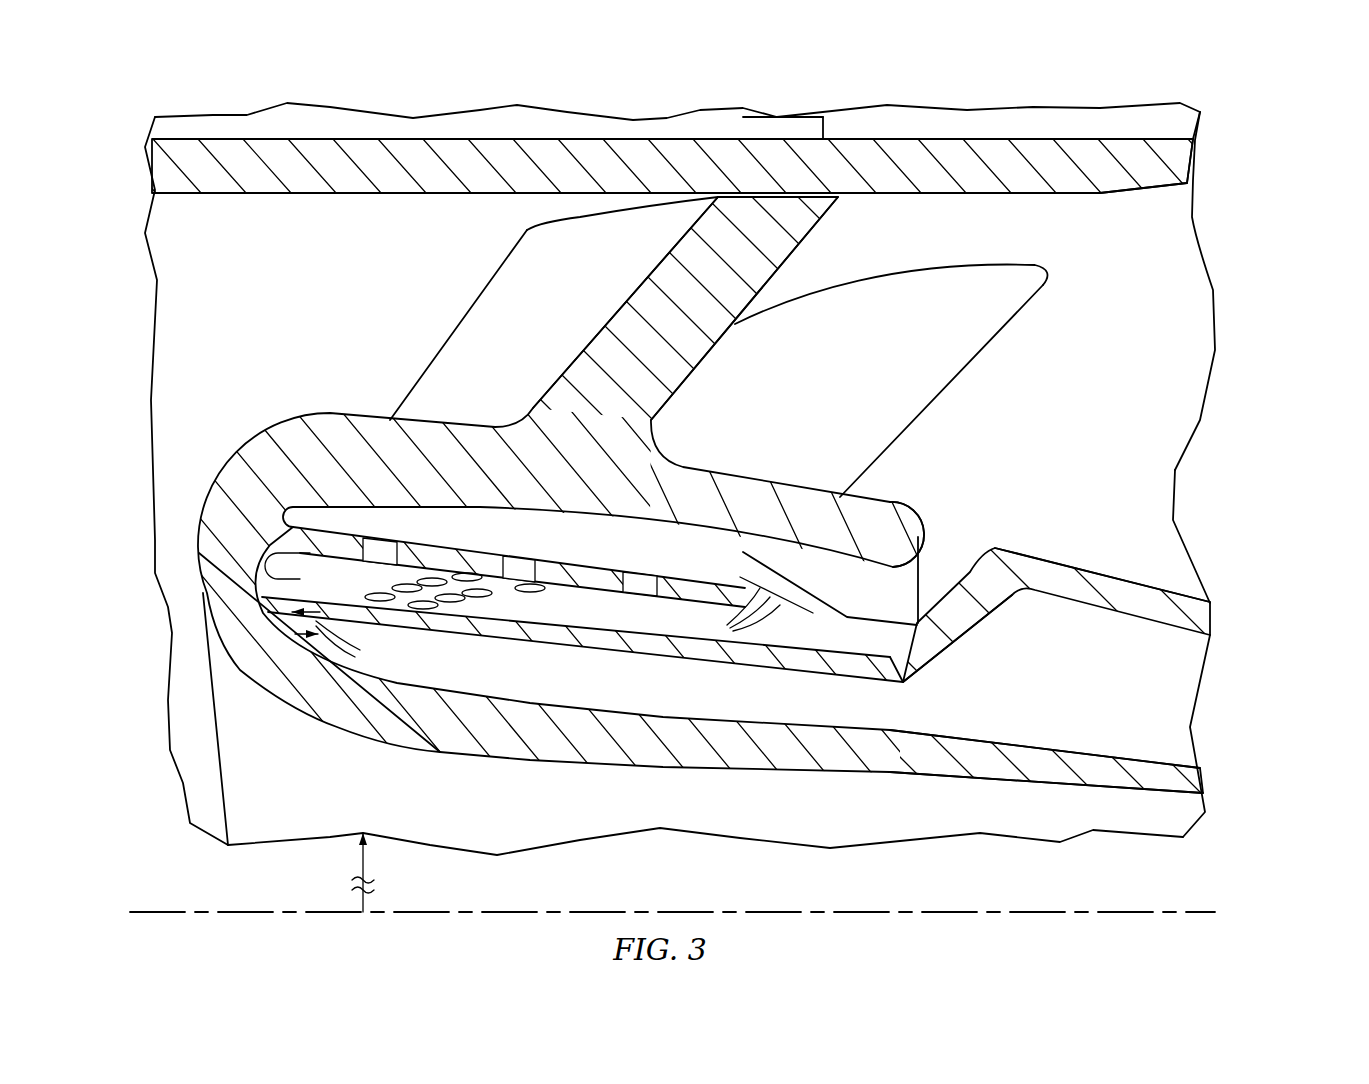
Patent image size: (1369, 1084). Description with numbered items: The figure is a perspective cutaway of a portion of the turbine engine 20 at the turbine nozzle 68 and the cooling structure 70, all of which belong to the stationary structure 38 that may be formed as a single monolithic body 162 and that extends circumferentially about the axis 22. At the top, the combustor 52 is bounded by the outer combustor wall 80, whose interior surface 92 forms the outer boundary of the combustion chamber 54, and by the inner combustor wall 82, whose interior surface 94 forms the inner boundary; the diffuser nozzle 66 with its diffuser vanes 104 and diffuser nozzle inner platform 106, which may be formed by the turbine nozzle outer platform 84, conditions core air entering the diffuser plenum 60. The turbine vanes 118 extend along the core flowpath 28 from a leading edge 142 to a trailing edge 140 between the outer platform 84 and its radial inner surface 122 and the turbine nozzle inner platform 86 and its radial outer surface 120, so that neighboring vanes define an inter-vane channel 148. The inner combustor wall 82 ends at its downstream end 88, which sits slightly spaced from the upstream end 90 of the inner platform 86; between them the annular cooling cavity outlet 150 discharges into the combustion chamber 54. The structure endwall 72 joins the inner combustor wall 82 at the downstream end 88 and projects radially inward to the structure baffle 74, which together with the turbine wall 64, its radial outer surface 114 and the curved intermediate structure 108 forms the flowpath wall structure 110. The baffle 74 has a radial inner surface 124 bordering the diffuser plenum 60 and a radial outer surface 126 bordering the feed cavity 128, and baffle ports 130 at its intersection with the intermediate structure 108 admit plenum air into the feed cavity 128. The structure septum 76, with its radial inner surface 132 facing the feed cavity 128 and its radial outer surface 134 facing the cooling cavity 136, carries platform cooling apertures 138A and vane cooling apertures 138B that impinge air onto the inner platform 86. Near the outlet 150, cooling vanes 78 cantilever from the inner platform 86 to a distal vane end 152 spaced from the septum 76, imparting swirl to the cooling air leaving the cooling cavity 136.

The turbine engine 20 is at (1212, 90).
The axis 22 is at (142, 910).
The core flowpath 28 is at (198, 354).
The stationary structure 38 is at (1210, 130).
The monolithic body 162 is at (1190, 161).
The combustor 52 is at (1133, 128).
The combustion chamber 54 is at (1138, 422).
The diffuser plenum 60 is at (1116, 702).
The turbine wall 64 is at (1212, 782).
The diffuser nozzle 66 is at (868, 130).
The turbine nozzle 68 is at (422, 327).
The cooling structure 70 is at (953, 667).
The structure endwall 72 is at (977, 623).
The structure baffle 74 is at (583, 642).
The structure septum 76 is at (590, 563).
The cooling vanes 78 is at (808, 597).
The outer combustor wall 80 is at (1200, 163).
The inner combustor wall 82 is at (1216, 618).
The turbine nozzle outer platform 84 is at (757, 139).
The turbine nozzle inner platform 86 is at (470, 427).
The inner combustor wall downstream end 88 is at (977, 553).
The turbine nozzle inner platform upstream end 90 is at (921, 537).
The interior surface of outer combustor wall 92 is at (1165, 192).
The interior surface of inner combustor wall 94 is at (1160, 587).
The diffuser vanes 104 is at (830, 130).
The diffuser nozzle inner platform 106 is at (150, 163).
The intermediate structure 108 is at (187, 574).
The flowpath wall structure 110 is at (215, 633).
The radial outer surface of turbine wall 114 is at (1163, 753).
The turbine vanes 118 is at (807, 252).
The radial outer surface of turbine nozzle inner platform 120 is at (428, 418).
The radial inner surface of turbine nozzle outer platform 122 is at (538, 195).
The baffle radial inner surface 124 is at (677, 653).
The baffle radial outer surface 126 is at (680, 637).
The feed cavity 128 is at (548, 619).
The baffle ports 130 is at (338, 645).
The septum radial inner surface 132 is at (280, 557).
The septum radial outer surface 134 is at (318, 510).
The cooling cavity 136 is at (548, 542).
The platform cooling apertures 138A is at (376, 548).
The vane cooling apertures 138B is at (533, 587).
The trailing edge 140 is at (479, 297).
The leading edge 142 is at (920, 410).
The inter-vane channel 148 is at (943, 234).
The cooling cavity outlet 150 is at (955, 542).
The distal vane end 152 is at (848, 622).